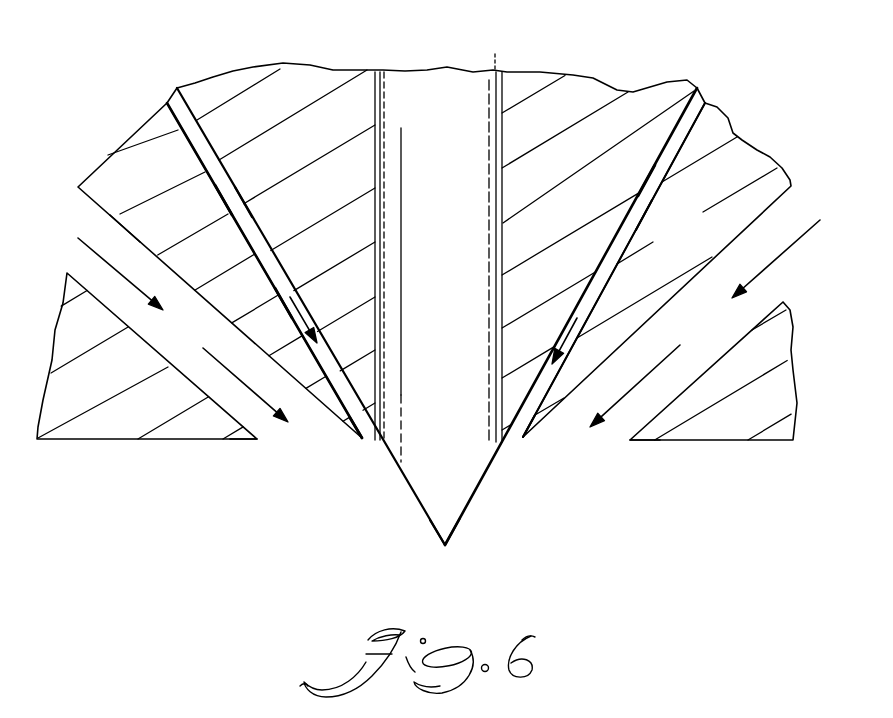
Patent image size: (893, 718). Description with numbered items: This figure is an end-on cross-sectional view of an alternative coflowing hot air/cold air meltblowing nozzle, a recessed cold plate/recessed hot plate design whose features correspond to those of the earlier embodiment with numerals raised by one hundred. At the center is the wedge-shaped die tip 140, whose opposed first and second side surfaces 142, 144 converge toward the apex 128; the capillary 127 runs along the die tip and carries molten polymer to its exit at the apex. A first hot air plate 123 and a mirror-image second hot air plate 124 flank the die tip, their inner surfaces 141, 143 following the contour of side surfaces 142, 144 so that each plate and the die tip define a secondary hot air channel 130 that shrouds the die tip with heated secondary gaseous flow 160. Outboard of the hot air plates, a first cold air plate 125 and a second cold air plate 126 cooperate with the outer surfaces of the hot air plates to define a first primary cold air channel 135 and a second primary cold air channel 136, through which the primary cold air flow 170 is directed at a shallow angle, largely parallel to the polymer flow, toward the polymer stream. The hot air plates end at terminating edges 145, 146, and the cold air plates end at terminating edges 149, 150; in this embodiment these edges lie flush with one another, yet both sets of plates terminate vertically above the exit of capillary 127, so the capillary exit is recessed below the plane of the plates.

The first hot air plate 123 is at (738, 133).
The second hot air plate 124 is at (110, 156).
The first cold air plate 125 is at (732, 407).
The second cold air plate 126 is at (197, 428).
The capillary 127 is at (468, 350).
The apex of die 128 is at (429, 554).
The secondary hot air channel 130 is at (170, 100).
The first primary cold air channel 135 is at (745, 292).
The second primary cold air channel 136 is at (100, 282).
The die tip 140 is at (286, 68).
The inner surface of first hot air plate 141 is at (640, 214).
The first side surface of die tip 142 is at (644, 181).
The inner surface of second hot air plate 143 is at (226, 198).
The second side surface of die tip 144 is at (242, 203).
The terminating edge of first hot air plate 145 is at (532, 440).
The terminating edge of second hot air plate 146 is at (360, 437).
The terminating edge of first cold air plate 149 is at (632, 440).
The terminating edge of second cold air plate 150 is at (250, 440).
The secondary hot gaseous flow 160 is at (289, 292).
The primary cold air flow 170 is at (128, 277).